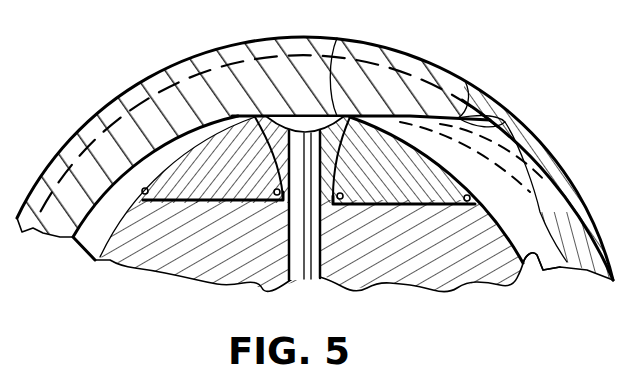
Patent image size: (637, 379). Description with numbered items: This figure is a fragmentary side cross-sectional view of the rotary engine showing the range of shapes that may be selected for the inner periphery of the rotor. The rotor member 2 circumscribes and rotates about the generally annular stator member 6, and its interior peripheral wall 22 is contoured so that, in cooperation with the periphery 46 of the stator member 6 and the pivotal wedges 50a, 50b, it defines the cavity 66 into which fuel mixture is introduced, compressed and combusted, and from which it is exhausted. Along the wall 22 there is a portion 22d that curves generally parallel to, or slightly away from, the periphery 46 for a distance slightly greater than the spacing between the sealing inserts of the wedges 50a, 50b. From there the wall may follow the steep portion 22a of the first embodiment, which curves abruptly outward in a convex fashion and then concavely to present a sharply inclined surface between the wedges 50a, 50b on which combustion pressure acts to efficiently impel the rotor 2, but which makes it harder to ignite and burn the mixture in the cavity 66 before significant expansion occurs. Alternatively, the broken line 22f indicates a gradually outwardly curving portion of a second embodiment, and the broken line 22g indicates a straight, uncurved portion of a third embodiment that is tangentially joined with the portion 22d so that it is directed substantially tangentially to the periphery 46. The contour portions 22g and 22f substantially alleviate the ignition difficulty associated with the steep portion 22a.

The rotor member 2 is at (97, 135).
The interior peripheral wall 22 is at (562, 208).
The steep portion 22a is at (458, 96).
The parallel portion 22d is at (350, 40).
The gradually outwardly curving portion 22f is at (522, 160).
The straight uncurved portion 22g is at (512, 124).
The stator member 6 is at (117, 257).
The periphery of the stator member 46 is at (528, 270).
The pivotal wedge 50a is at (412, 205).
The pivotal wedge 50b is at (207, 205).
The cavity 66 is at (293, 116).